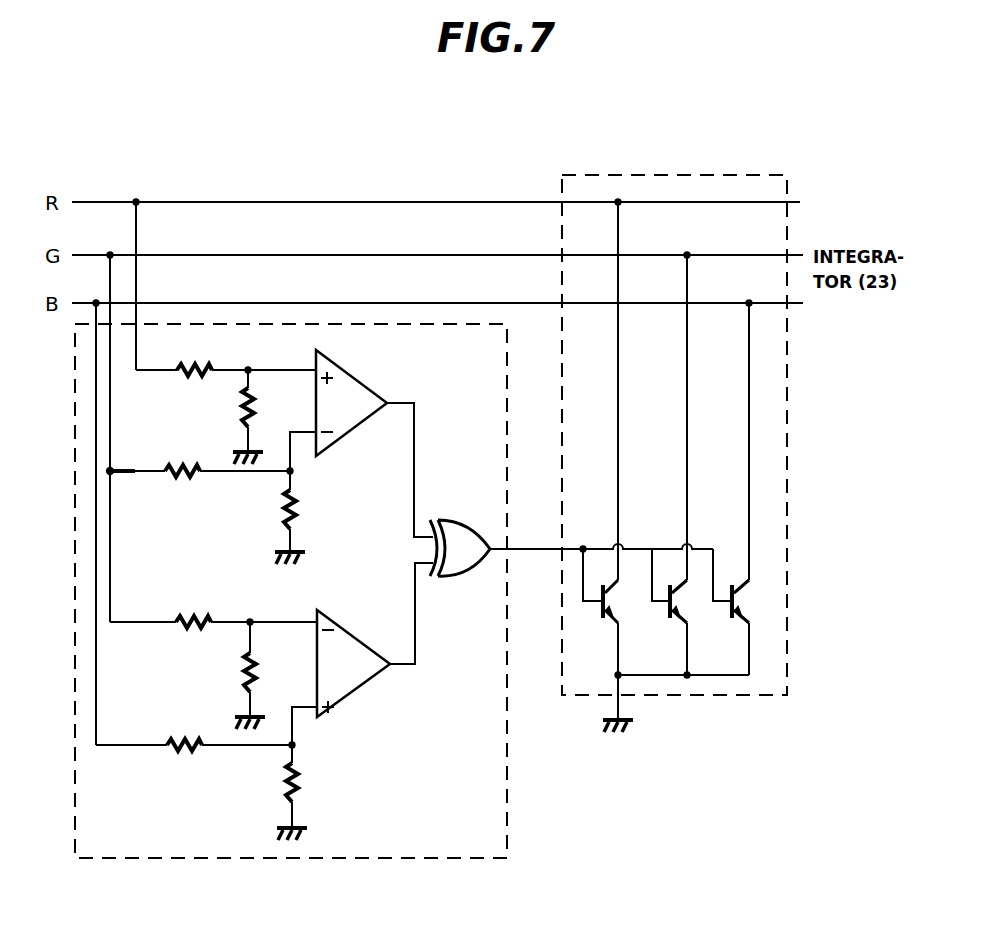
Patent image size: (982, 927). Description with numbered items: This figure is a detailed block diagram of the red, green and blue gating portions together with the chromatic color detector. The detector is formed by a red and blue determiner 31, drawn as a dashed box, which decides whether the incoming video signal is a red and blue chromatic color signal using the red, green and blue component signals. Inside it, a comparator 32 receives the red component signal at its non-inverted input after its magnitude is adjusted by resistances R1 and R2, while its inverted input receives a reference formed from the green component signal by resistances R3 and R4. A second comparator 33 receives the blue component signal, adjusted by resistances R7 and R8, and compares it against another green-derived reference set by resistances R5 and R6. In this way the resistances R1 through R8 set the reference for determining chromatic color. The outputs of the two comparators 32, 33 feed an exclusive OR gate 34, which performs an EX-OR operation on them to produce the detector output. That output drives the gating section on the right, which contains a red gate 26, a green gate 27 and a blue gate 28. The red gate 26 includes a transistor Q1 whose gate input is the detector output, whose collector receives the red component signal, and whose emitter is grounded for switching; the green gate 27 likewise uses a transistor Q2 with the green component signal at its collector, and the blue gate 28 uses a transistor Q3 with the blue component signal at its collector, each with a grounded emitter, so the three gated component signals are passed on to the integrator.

The red and blue determiner 31 is at (460, 833).
The comparator 32 is at (358, 400).
The comparator 33 is at (360, 660).
The exclusive OR gate 34 is at (462, 563).
The red gate 26 is at (612, 438).
The green gate 27 is at (683, 465).
The blue gate 28 is at (744, 489).
The resistance R1 is at (226, 358).
The resistance R2 is at (235, 417).
The resistance R3 is at (212, 459).
The resistance R4 is at (302, 517).
The resistance R5 is at (213, 611).
The resistance R6 is at (237, 675).
The resistance R7 is at (194, 733).
The resistance R8 is at (304, 792).
The transistor Q1 is at (607, 640).
The transistor Q2 is at (676, 640).
The transistor Q3 is at (738, 640).